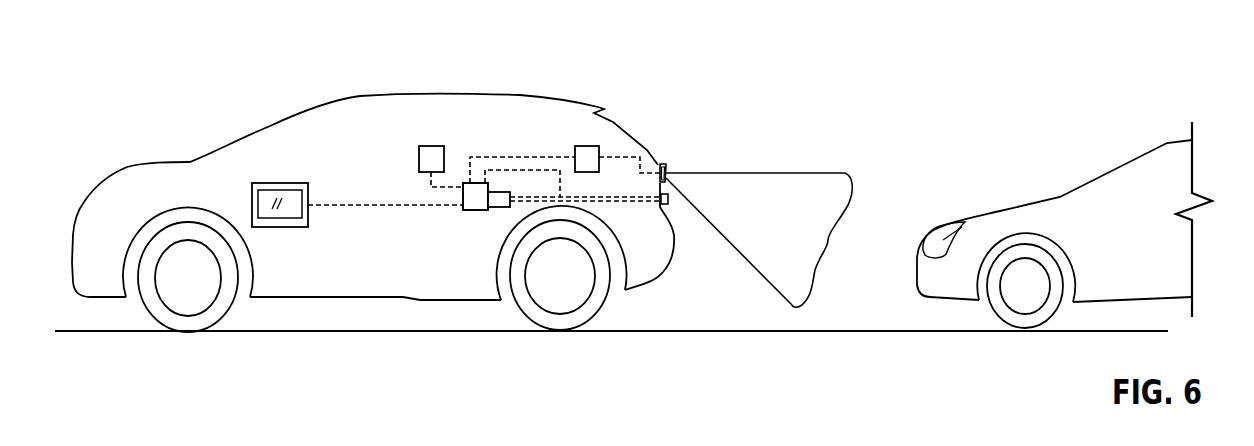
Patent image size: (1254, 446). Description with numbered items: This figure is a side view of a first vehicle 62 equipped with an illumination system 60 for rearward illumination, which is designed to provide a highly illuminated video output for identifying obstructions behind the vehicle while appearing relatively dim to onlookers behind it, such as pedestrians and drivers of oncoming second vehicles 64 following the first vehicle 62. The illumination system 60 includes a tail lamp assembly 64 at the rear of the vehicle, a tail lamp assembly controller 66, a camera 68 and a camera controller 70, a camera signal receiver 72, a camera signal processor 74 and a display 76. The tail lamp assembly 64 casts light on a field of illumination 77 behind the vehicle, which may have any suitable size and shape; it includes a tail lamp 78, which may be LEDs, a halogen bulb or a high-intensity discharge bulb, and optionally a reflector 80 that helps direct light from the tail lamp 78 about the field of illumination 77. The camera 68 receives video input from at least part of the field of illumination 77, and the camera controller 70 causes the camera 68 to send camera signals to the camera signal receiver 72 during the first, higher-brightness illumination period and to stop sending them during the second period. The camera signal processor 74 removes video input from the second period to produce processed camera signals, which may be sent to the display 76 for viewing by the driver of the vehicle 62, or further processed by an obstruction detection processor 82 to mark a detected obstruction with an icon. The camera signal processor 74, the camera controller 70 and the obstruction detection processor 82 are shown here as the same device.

The illumination system 60 is at (732, 82).
The first vehicle 62 is at (373, 95).
The tail lamp assembly 64 is at (672, 177).
The tail lamp assembly controller 66 is at (575, 152).
The camera 68 is at (668, 203).
The camera controller 70 is at (472, 210).
The camera signal processor 74 is at (447, 286).
The camera signal receiver 72 is at (498, 207).
The display 76 is at (278, 183).
The field of illumination 77 is at (828, 240).
The tail lamp 78 is at (669, 166).
The reflector 80 is at (663, 163).
The obstruction detection processor 82 is at (430, 146).